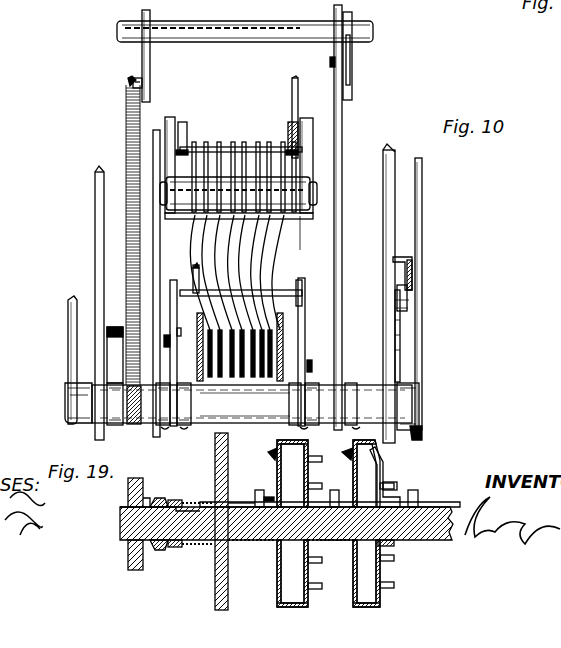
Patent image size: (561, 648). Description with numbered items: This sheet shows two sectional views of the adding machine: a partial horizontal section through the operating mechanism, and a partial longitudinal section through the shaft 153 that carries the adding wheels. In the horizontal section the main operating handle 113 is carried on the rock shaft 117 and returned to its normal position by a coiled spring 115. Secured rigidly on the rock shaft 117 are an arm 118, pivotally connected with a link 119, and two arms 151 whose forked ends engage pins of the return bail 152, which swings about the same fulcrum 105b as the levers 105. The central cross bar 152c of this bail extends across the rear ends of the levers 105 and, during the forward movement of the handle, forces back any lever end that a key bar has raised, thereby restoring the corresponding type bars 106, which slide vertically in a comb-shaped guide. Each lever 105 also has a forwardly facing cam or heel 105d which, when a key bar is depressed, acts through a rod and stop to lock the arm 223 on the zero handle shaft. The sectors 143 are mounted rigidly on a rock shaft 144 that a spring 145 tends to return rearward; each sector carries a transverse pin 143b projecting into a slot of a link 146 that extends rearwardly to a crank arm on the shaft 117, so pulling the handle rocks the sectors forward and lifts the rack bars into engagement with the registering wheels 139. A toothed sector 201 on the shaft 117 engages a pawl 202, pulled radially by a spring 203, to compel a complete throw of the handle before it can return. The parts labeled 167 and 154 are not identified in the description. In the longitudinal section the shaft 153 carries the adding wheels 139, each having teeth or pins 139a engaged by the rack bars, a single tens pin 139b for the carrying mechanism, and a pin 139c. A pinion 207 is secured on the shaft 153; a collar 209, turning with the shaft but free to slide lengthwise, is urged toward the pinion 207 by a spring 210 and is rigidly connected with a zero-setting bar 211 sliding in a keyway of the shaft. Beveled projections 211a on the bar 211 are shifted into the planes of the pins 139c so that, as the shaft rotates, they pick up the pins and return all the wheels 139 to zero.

In FIG. 10, the sector 143 is at (143, 52).
In FIG. 10, the rock shaft 144 is at (188, 43).
In FIG. 10, the transverse pin 143b is at (330, 62).
In FIG. 10, the arm 223 is at (290, 88).
In FIG. 10, the cam or heel 105d is at (254, 142).
In FIG. 10, the spring 145 is at (127, 137).
In FIG. 10, the fulcrum 105b is at (320, 195).
In FIG. 10, the bar 167 is at (420, 212).
In FIG. 10, the link 119 is at (193, 270).
In FIG. 10, the return bail 152 is at (290, 235).
In FIG. 10, the lever 105 is at (280, 258).
In FIG. 10, the spring 203 is at (412, 270).
In FIG. 10, the central cross bar 152c is at (282, 288).
In FIG. 10, the pawl 202 is at (405, 297).
In FIG. 10, the main operating handle 113 is at (70, 318).
In FIG. 10, the arm 118 is at (193, 322).
In FIG. 10, the arms 151 is at (304, 345).
In FIG. 10, the link 146 is at (341, 345).
In FIG. 10, the toothed sector 201 is at (397, 350).
In FIG. 10, the coiled spring 115 is at (115, 352).
In FIG. 10, the pin 154 is at (177, 356).
In FIG. 10, the rock shaft 117 is at (83, 396).
In FIG. 10, the type bar 106 is at (266, 378).
In FIG. 19, the collar 209 is at (157, 497).
In FIG. 19, the tens pin 139b is at (275, 450).
In FIG. 19, the pin 139c is at (348, 500).
In FIG. 19, the zero-setting bar 211 is at (238, 506).
In FIG. 19, the projections 211a is at (418, 497).
In FIG. 19, the shaft 153 is at (125, 520).
In FIG. 19, the pinion 207 is at (130, 566).
In FIG. 19, the spring 210 is at (190, 543).
In FIG. 19, the teeth or pins 139a is at (397, 557).
In FIG. 19, the number wheels 139 is at (384, 602).